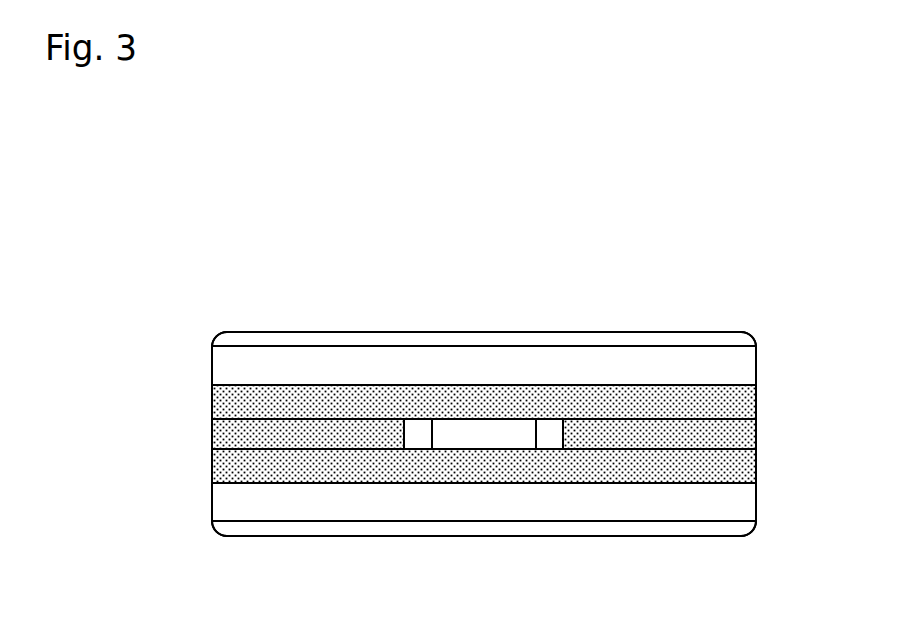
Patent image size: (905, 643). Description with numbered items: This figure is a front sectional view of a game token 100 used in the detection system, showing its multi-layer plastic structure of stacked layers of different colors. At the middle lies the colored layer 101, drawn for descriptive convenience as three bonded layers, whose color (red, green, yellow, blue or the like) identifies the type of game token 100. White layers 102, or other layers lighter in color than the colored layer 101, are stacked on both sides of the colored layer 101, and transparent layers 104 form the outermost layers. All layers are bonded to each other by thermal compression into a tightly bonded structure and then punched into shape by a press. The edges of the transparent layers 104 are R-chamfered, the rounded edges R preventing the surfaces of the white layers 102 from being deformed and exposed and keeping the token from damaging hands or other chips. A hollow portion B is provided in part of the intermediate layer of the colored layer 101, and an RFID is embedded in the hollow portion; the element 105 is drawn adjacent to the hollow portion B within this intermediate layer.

The game token 100 is at (688, 333).
The colored layer 101 is at (208, 385).
The white layer 102 is at (212, 368).
The transparent layer 104 is at (293, 343).
The cavity 105 is at (483, 432).
The hollow portion B is at (419, 433).
The R chamfering R is at (214, 335).